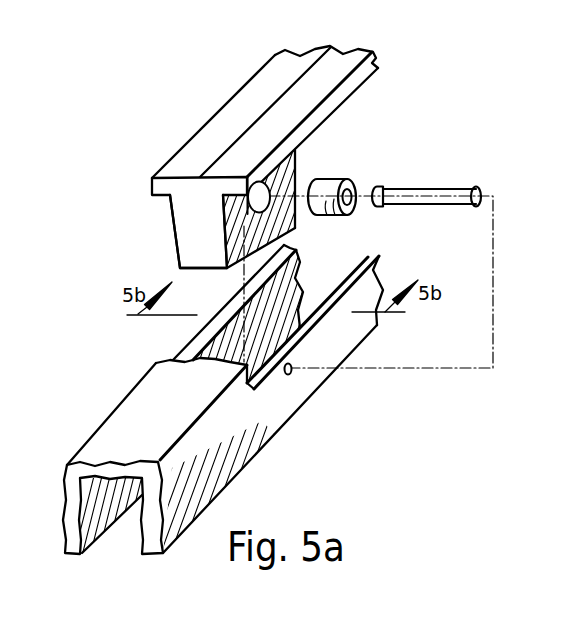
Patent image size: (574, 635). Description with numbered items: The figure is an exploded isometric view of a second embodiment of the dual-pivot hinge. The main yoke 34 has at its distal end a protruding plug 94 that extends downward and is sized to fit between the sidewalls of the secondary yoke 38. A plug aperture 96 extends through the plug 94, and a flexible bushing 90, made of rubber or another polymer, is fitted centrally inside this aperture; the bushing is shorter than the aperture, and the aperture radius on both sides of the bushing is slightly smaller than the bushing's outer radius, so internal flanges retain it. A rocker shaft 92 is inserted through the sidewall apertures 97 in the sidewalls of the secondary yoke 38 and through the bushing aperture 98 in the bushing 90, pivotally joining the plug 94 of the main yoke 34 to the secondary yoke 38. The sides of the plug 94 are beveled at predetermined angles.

The main yoke 34 is at (199, 148).
The secondary yoke 38 is at (233, 423).
The flexible bushing 90 is at (330, 186).
The rocker shaft 92 is at (440, 189).
The protruding plug 94 is at (190, 246).
The plug aperture 96 is at (259, 198).
The sidewall apertures 97 is at (290, 374).
The bushing aperture 98 is at (349, 202).